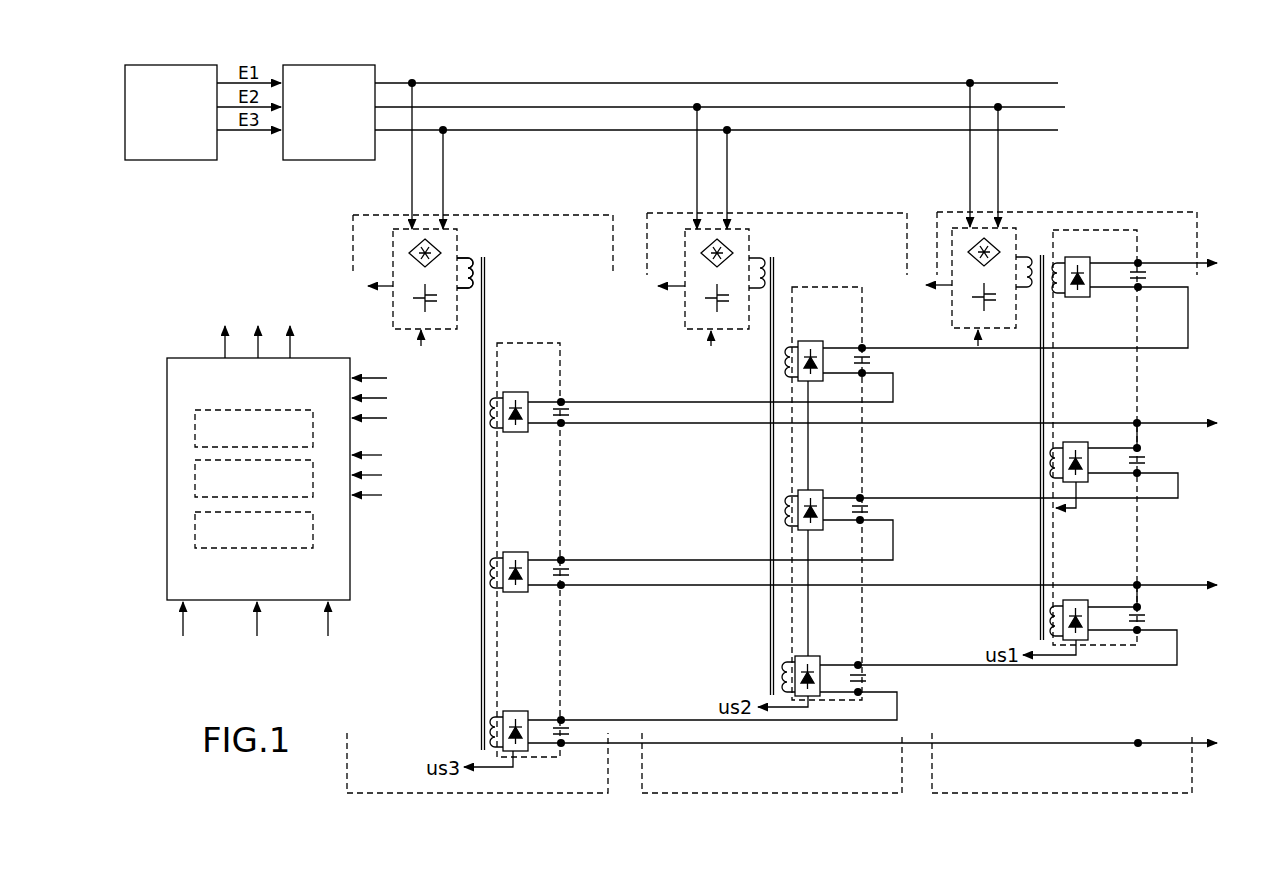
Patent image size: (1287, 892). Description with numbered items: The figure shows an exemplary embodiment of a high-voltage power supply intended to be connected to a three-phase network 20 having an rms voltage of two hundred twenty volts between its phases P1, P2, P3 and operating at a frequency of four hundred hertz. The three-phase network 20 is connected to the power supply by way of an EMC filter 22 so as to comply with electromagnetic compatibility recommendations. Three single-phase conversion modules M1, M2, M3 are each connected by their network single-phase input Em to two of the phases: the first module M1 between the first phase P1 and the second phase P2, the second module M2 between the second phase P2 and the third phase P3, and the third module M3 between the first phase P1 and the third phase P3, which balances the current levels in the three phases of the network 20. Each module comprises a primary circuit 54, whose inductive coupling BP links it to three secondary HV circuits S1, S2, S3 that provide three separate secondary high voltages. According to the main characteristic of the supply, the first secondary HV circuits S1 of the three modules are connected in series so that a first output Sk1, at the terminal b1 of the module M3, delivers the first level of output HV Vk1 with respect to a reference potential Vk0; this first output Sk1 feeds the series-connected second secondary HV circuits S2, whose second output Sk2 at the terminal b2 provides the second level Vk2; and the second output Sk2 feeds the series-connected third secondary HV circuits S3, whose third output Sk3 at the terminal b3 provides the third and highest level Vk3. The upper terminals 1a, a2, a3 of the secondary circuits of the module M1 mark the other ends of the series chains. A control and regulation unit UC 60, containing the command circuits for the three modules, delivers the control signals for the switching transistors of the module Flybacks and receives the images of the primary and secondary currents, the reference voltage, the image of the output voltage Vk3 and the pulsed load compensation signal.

The three-phase network 20 is at (188, 161).
The EMC filter 22 is at (323, 161).
The primary circuit 54 is at (537, 343).
The control and regulation unit UC 60 is at (167, 443).
The first single-phase conversion module M1 is at (949, 212).
The second single-phase conversion module M2 is at (680, 213).
The third single-phase conversion module M3 is at (392, 213).
The network single-phase input Em is at (453, 209).
The primary winding / bypass inductor BP is at (460, 257).
The first secondary HV circuit S1 is at (509, 380).
The second secondary HV circuit S2 is at (509, 532).
The third secondary HV circuit S3 is at (506, 698).
The cell output terminal 1a is at (1140, 260).
The cell output terminal a2 is at (1142, 448).
The cell output terminal a3 is at (1148, 603).
The terminal b1 of the module M3 b1 is at (565, 427).
The terminal b2 of the module M3 b2 is at (565, 589).
The terminal b3 of the module M3 b3 is at (565, 747).
The first output Sk1 is at (1140, 420).
The second output Sk2 is at (1140, 582).
The third output Sk3 is at (1140, 740).
The first phase P1 is at (1058, 83).
The second phase P2 is at (1065, 107).
The third phase P3 is at (1058, 130).
The reference potential Vk0 is at (1198, 263).
The first level of output HV Vk1 is at (910, 423).
The second level of output HV Vk2 is at (910, 585).
The third level of output HV Vk3 is at (910, 743).